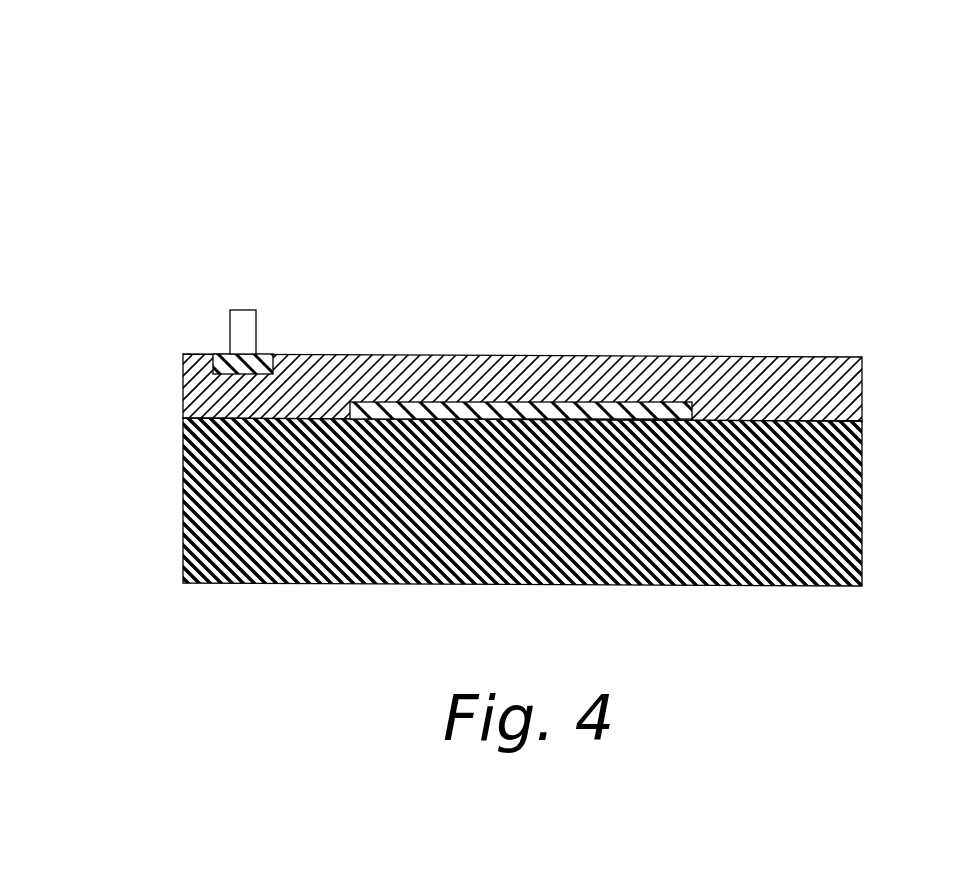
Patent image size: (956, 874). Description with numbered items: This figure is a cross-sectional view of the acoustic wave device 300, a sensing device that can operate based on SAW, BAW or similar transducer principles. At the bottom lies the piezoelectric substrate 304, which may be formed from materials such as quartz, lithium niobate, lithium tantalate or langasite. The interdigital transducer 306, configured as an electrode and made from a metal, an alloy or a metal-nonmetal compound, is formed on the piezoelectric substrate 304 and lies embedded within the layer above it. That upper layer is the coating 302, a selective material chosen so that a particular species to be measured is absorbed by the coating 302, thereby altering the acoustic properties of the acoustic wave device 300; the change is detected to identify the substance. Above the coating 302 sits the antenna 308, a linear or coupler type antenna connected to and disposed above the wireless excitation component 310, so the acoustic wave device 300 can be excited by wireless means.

The acoustic wave device 300 is at (150, 112).
The coating 302 is at (184, 383).
The piezoelectric substrate 304 is at (184, 478).
The interdigital transducer 306 is at (487, 401).
The antenna 308 is at (228, 317).
The wireless excitation component 310 is at (267, 353).